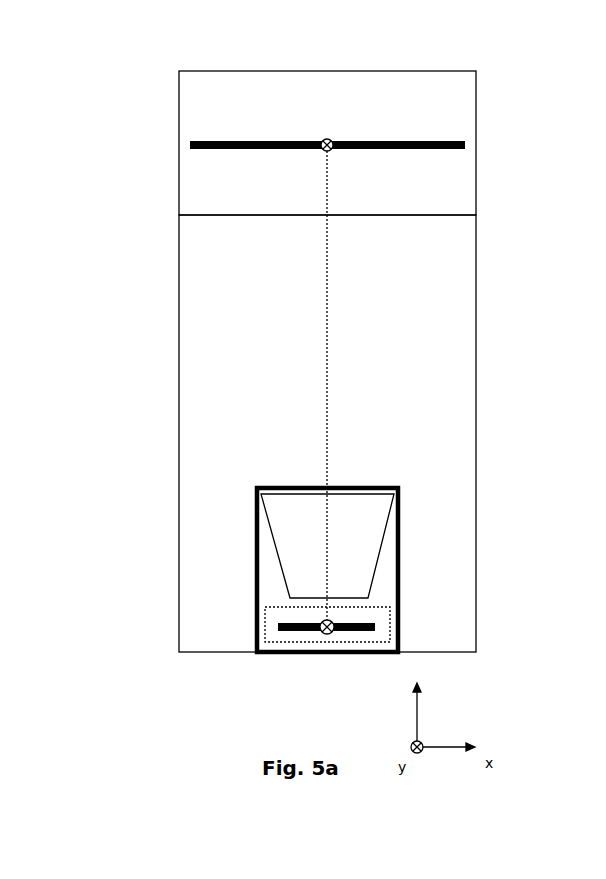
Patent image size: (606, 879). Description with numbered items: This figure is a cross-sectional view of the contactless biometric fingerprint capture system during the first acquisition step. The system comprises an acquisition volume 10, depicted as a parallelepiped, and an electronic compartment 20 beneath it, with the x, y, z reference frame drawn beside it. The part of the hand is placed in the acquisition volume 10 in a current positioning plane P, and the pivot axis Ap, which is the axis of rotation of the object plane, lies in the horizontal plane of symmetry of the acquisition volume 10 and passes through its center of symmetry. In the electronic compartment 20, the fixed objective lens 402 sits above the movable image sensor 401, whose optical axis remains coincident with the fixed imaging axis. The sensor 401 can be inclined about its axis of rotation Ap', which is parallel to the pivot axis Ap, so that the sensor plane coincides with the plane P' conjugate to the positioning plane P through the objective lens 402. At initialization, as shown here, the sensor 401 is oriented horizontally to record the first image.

The acquisition volume 10 is at (205, 87).
The electronic compartment 20 is at (210, 368).
The current positioning plane P is at (251, 164).
The pivot axis Ap is at (302, 86).
The objective lens 402 is at (282, 518).
The image sensor 401 is at (278, 624).
The conjugate plane P' is at (409, 603).
The axis of rotation of the image plane Ap' is at (296, 668).